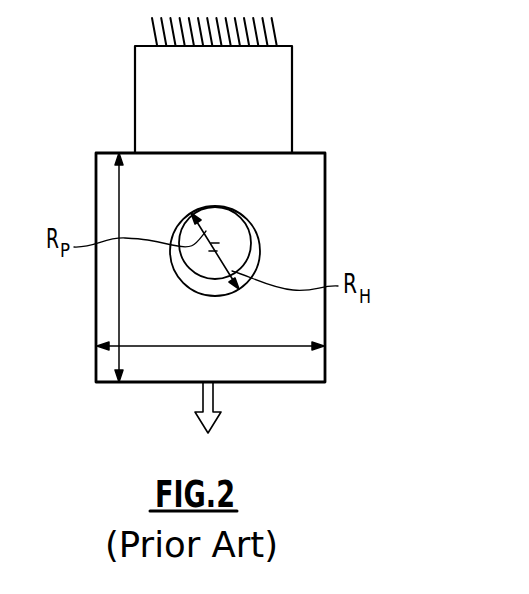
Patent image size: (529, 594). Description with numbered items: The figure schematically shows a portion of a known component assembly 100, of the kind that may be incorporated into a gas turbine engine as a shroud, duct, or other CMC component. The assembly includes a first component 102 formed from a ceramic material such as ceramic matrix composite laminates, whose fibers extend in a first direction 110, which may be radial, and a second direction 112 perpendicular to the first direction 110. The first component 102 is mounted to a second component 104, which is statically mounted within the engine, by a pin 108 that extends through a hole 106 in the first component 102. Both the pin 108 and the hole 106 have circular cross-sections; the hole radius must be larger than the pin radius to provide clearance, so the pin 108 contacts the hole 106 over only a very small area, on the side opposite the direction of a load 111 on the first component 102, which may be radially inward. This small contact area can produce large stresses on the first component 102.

The component assembly 100 is at (338, 49).
The first component 102 is at (312, 176).
The second component 104 is at (277, 124).
The hole 106 is at (258, 249).
The pin 108 is at (227, 227).
The first direction 110 is at (118, 358).
The load 111 is at (218, 427).
The second direction 112 is at (302, 344).